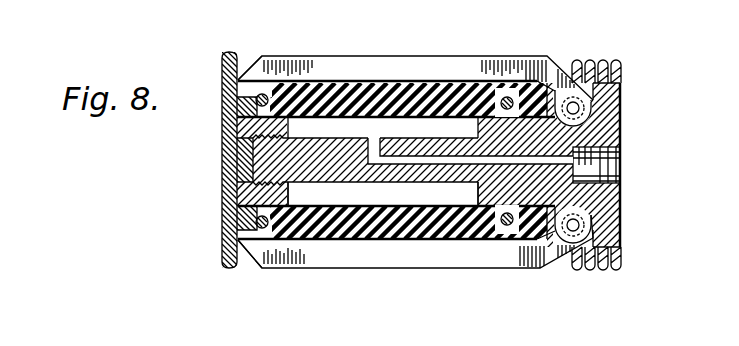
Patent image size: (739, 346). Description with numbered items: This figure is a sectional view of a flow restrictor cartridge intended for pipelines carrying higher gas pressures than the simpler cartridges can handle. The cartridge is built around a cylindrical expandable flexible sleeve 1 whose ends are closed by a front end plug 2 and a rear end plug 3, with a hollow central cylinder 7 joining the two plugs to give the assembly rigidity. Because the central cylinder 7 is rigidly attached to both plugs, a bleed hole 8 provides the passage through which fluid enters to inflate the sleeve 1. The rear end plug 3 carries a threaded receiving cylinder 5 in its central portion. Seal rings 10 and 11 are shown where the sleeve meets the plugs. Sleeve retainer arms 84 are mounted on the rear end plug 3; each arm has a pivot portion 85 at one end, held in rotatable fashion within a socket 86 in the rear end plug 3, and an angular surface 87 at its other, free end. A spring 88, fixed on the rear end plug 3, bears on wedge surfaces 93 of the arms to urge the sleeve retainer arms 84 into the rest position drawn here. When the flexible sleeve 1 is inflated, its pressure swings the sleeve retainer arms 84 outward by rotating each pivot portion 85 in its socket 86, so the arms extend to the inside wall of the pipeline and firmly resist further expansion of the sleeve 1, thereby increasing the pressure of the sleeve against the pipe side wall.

The expandable flexible sleeve 1 is at (422, 97).
The front end plug 2 is at (230, 168).
The rear end plug 3 is at (612, 200).
The threaded receiving cylinder 5 is at (620, 162).
The hollow central cylinder 7 is at (352, 180).
The bleed hole 8 is at (374, 138).
The seal ring 10 is at (509, 97).
The seal ring 11 is at (263, 94).
The sleeve retainer arms 84 is at (312, 62).
The pivot portion 85 is at (593, 100).
The sockets 86 is at (592, 114).
The angular surface 87 is at (250, 72).
The spring 88 is at (590, 62).
The wedge surfaces 93 is at (562, 66).